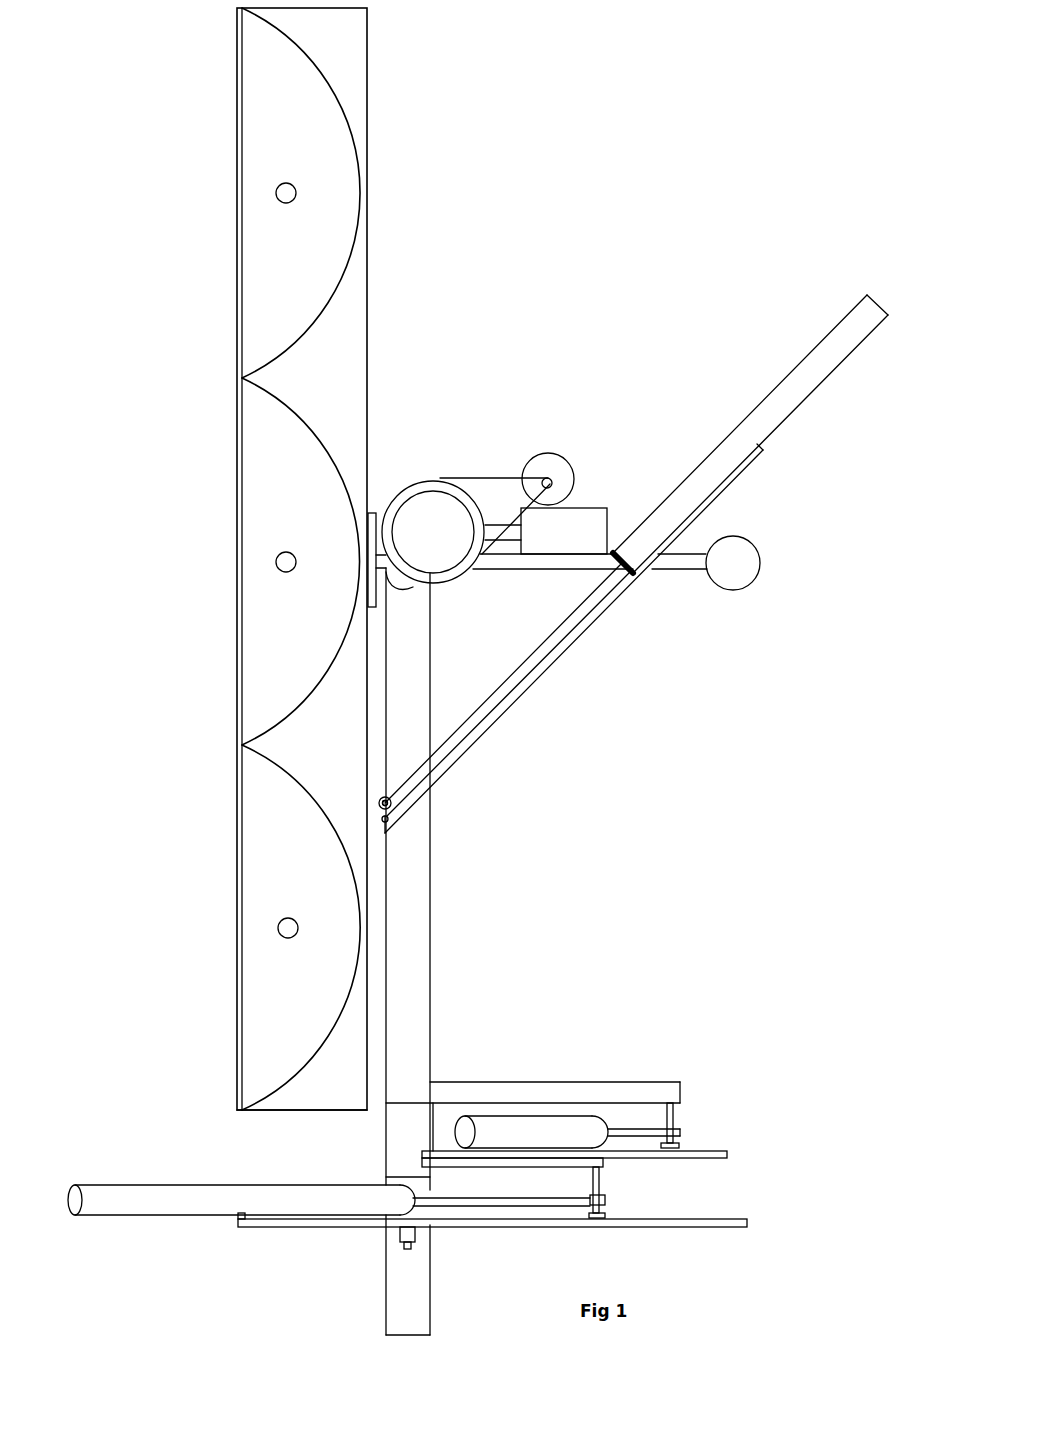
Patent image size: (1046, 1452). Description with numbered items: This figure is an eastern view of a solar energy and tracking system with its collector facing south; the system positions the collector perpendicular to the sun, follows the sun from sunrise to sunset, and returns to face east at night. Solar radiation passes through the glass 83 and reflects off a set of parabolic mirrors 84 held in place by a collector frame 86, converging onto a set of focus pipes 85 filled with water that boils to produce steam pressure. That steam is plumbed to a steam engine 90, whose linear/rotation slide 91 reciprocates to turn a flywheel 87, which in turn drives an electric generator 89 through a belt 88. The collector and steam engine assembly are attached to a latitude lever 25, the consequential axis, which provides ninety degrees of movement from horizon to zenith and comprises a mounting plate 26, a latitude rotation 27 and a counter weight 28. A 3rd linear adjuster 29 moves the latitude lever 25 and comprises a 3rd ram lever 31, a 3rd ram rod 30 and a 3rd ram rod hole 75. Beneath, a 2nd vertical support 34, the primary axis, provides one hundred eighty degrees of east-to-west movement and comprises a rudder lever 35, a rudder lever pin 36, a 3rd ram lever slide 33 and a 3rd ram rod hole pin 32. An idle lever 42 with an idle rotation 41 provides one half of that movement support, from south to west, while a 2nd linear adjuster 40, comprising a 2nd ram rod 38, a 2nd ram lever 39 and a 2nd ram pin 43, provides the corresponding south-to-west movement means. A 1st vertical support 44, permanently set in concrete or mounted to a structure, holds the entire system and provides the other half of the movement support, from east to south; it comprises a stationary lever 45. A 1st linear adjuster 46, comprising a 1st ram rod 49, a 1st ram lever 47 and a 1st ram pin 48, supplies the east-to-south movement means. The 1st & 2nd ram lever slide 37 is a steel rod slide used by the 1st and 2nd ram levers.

The latitude lever 25 is at (681, 573).
The mounting plate 26 is at (371, 513).
The latitude rotation 27 is at (404, 586).
The counter weight 28 is at (745, 562).
The 3rd linear adjuster 29 is at (787, 387).
The 3rd ram rod 30 is at (530, 657).
The 3rd ram lever 31 is at (522, 697).
The 3rd ram rod hole pin 32 is at (382, 800).
The 3rd ram lever slide 33 is at (381, 819).
The 2nd vertical support 34 is at (422, 912).
The rudder lever 35 is at (517, 1088).
The rudder lever pin 36 is at (673, 1115).
The 1st & 2nd ram lever slide 37 is at (679, 1147).
The 2nd ram rod 38 is at (682, 1133).
The 2nd ram lever 39 is at (713, 1154).
The 2nd linear adjuster 40 is at (563, 1128).
The idle rotation 41 is at (398, 1137).
The idle lever 42 is at (558, 1163).
The 2nd ram pin 43 is at (598, 1185).
The 1st vertical support 44 is at (395, 1278).
The stationary lever 45 is at (416, 1236).
The 1st linear adjuster 46 is at (190, 1192).
The 1st ram lever 47 is at (748, 1222).
The 1st ram pin 48 is at (404, 1247).
The 1st ram rod 49 is at (510, 1200).
The 3rd ram rod hole 75 is at (381, 805).
The glass 83 is at (238, 986).
The parabolic mirrors 84 is at (293, 792).
The focus pipes 85 is at (278, 562).
The collector frame 86 is at (352, 43).
The flywheel 87 is at (418, 505).
The belt 88 is at (460, 477).
The electric generator 89 is at (539, 465).
The steam engine 90 is at (580, 518).
The linear/rotation slide 91 is at (497, 527).